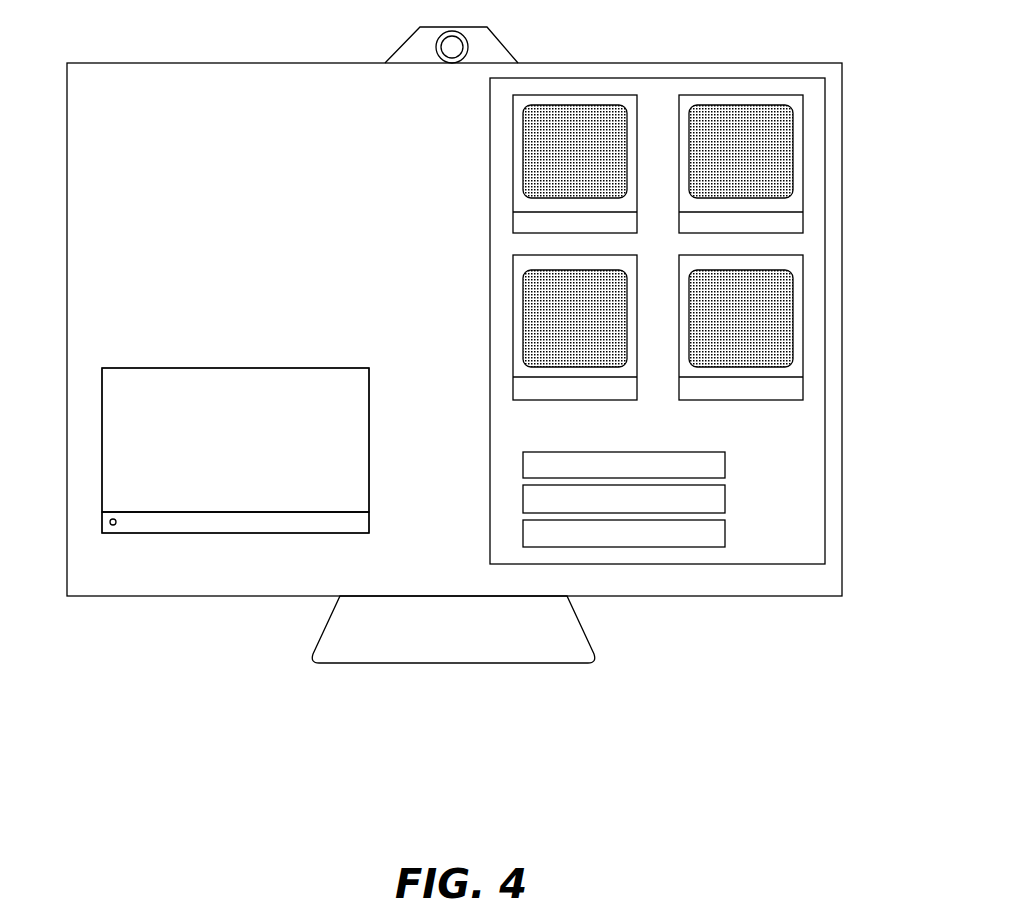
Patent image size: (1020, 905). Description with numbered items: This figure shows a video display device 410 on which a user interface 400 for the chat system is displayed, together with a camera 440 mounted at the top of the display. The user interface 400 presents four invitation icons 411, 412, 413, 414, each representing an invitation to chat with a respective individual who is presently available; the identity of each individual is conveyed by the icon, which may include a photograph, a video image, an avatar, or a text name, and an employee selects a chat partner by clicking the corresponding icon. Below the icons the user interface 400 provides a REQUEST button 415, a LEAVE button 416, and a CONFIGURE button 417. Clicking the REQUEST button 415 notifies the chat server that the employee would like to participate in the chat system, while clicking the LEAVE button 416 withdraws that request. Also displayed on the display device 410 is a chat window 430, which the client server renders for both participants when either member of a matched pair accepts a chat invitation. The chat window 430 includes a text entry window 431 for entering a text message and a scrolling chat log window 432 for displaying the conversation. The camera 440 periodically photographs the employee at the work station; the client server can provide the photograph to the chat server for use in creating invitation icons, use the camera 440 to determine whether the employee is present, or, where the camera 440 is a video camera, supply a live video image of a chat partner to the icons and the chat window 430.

The user interface 400 is at (660, 78).
The display device 410 is at (120, 62).
The invitation icon 411 is at (512, 157).
The invitation icon 412 is at (512, 325).
The invitation icon 413 is at (806, 157).
The invitation icon 414 is at (806, 325).
The REQUEST button 415 is at (726, 464).
The LEAVE button 416 is at (726, 498).
The CONFIGURE button 417 is at (726, 533).
The chat window 430 is at (240, 360).
The text entry window 431 is at (348, 528).
The scrolling chat log window 432 is at (363, 467).
The camera 440 is at (508, 54).